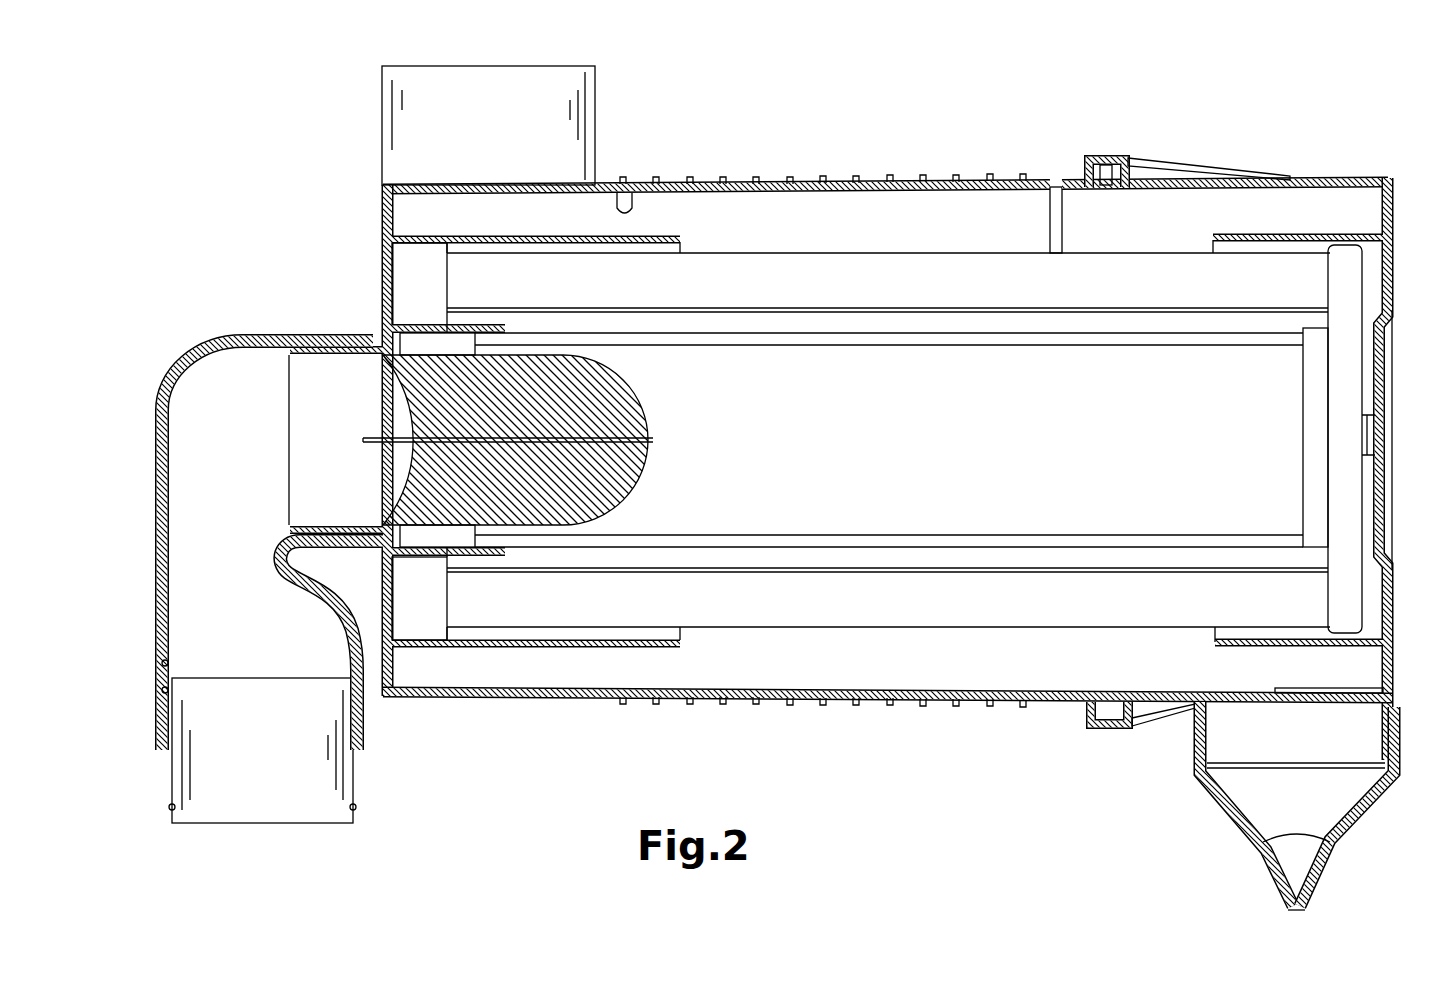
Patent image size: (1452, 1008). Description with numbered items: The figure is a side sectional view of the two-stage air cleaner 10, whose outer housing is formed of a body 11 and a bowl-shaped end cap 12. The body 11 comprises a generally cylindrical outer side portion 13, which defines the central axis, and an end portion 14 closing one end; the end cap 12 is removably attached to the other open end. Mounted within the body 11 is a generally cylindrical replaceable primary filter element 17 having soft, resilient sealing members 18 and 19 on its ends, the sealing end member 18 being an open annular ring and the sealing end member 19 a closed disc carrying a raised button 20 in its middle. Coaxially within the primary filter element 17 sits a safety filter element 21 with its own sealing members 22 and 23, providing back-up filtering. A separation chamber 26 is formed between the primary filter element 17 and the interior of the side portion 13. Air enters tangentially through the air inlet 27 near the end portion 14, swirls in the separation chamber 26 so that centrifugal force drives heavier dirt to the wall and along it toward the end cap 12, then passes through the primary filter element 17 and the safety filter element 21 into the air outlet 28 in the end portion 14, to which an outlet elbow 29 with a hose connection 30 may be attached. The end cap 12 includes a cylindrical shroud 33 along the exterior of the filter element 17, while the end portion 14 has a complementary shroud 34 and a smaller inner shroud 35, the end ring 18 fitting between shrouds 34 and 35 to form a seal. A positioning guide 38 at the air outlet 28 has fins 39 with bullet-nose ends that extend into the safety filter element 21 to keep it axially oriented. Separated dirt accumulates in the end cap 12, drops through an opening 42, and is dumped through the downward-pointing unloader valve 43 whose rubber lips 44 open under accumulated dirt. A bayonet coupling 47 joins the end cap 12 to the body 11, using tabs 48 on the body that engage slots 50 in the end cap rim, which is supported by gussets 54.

The two-stage air cleaner 10 is at (893, 765).
The body 11 is at (872, 168).
The end cap 12 is at (1293, 178).
The cylindrical outer side portion 13 is at (940, 176).
The end portion 14 is at (392, 262).
The replaceable filter element 17 is at (745, 275).
The sealing end member 18 is at (420, 615).
The sealing end member 19 is at (1345, 278).
The raised protrusion or button 20 is at (1367, 412).
The safety filter element 21 is at (1037, 452).
The sealing member 22 is at (460, 560).
The sealing member 23 is at (1315, 487).
The separation chamber 26 is at (633, 208).
The air inlet 27 is at (418, 113).
The air outlet 28 is at (325, 338).
The outlet elbow 29 is at (175, 392).
The connection 30 is at (315, 770).
The cylindrical shroud 33 is at (1305, 240).
The cylindrical shroud 34 is at (500, 235).
The smaller cylindrical shroud 35 is at (433, 322).
The positioning guide 38 is at (660, 390).
The fins 39 is at (637, 405).
The opening 42 is at (1322, 690).
The unloader valve 43 is at (1378, 820).
The lips 44 is at (1318, 867).
The bayonet coupling 47 is at (1120, 150).
The tabs 48 is at (1082, 172).
The slots 50 is at (1088, 158).
The gussets 54 is at (1142, 170).